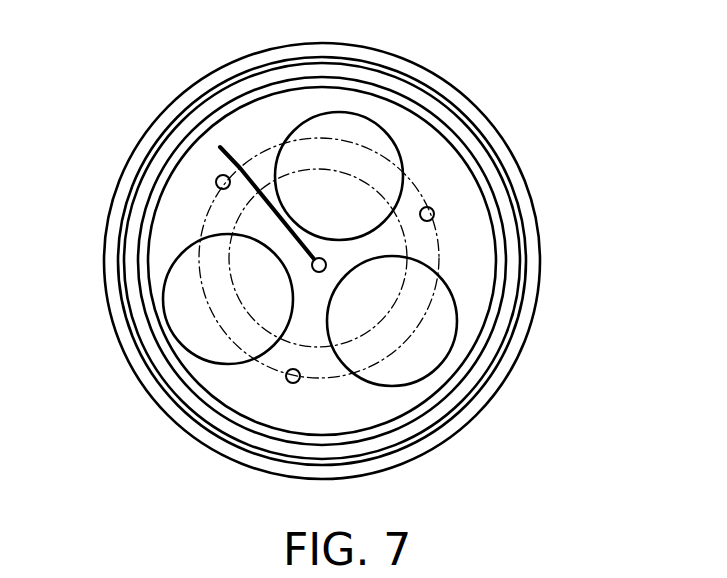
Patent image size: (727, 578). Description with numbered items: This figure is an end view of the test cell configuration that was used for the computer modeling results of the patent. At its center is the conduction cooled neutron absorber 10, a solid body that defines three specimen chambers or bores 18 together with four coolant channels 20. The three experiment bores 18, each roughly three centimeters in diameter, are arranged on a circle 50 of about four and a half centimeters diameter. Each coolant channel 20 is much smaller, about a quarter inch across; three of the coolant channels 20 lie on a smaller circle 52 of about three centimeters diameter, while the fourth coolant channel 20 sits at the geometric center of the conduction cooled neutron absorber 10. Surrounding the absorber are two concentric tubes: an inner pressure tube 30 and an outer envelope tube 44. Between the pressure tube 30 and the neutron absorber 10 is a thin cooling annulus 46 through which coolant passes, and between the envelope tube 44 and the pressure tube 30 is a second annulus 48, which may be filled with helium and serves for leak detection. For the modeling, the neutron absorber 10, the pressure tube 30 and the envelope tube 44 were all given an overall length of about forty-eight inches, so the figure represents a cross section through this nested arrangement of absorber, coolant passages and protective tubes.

The conduction cooled neutron absorber 10 is at (222, 381).
The specimen chambers or bores 18 is at (363, 117).
The coolant channels 20 is at (224, 175).
The pressure tube 30 is at (516, 280).
The envelope tube 44 is at (481, 110).
The cooling annulus 46 is at (138, 287).
The second annulus 48 is at (521, 205).
The circle 50 is at (437, 270).
The circle 52 is at (397, 216).